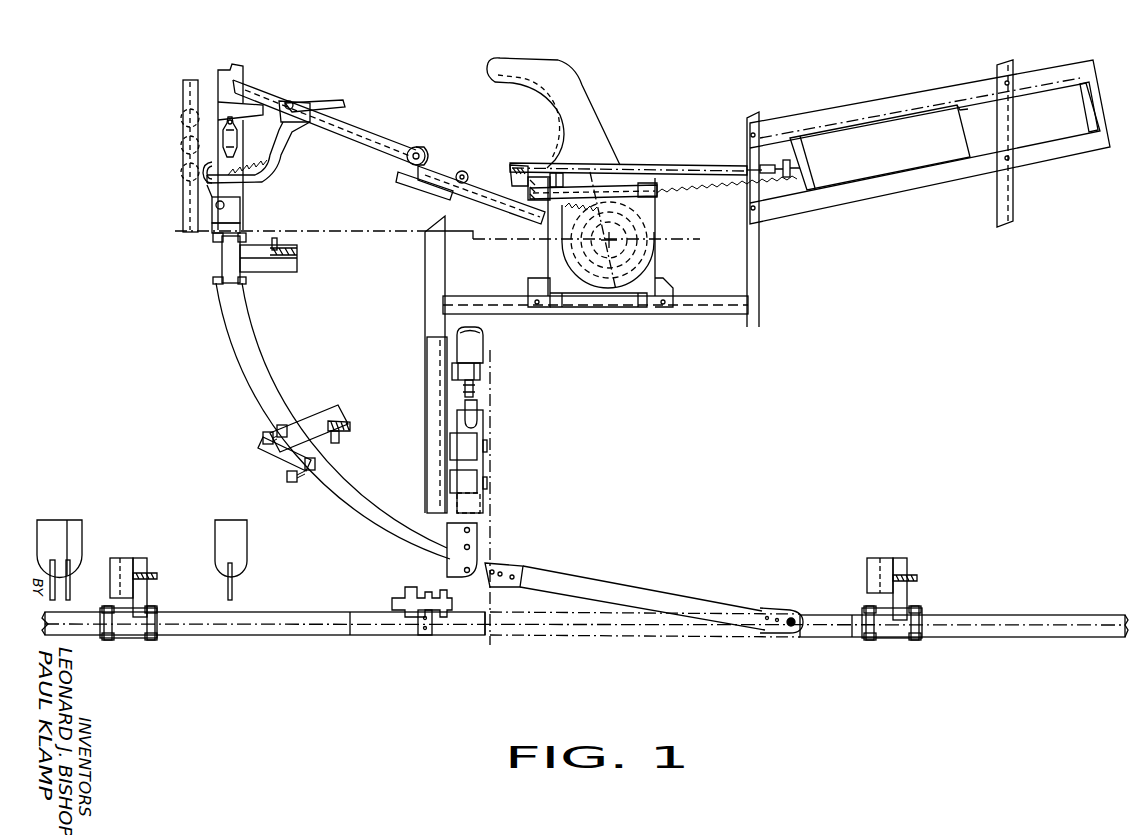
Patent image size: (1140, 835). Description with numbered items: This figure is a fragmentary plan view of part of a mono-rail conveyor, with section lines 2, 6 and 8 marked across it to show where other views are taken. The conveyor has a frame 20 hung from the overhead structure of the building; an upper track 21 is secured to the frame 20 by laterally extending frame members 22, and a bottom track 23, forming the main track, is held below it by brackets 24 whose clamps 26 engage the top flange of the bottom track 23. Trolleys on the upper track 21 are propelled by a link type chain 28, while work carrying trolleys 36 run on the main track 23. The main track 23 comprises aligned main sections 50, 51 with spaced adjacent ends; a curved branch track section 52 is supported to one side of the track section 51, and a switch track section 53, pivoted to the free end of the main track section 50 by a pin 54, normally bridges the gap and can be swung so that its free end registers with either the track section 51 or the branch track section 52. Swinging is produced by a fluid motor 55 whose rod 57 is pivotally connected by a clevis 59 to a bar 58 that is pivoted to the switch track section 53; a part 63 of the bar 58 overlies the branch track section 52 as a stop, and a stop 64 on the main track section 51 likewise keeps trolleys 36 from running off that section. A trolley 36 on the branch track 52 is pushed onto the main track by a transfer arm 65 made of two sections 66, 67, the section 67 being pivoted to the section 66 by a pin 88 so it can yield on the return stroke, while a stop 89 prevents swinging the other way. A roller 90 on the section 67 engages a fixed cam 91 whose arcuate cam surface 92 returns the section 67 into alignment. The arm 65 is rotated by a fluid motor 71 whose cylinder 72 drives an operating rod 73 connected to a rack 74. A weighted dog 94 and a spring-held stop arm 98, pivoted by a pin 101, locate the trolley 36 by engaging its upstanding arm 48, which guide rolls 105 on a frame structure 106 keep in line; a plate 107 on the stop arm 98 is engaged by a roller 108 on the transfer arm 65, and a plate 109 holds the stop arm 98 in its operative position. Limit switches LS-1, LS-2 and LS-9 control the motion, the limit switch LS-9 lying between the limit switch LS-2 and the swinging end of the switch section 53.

The section line 2- 2 is at (200, 242).
The section line 6- 6 is at (490, 327).
The drum 8 is at (608, 172).
The frame 20 is at (300, 265).
The upper track 21 is at (290, 636).
The laterally extending frame members 22 is at (125, 558).
The bottom track 23 is at (425, 636).
The brackets 24 is at (308, 420).
The clamps 26 is at (152, 641).
The link type chain 28 is at (1022, 623).
The work carrying trolleys 36 is at (212, 190).
The upstanding arm 48 is at (205, 173).
The main section 50 is at (825, 613).
The main section 51 is at (356, 611).
The curved branch track section 52 is at (377, 515).
The switch track section 53 is at (641, 588).
The pin 54 is at (793, 617).
The fluid motor 55 is at (488, 343).
The rod 57 is at (475, 389).
The bar 58 is at (485, 445).
The clevis 59 is at (478, 408).
The part 63 is at (480, 541).
The stop 64 is at (410, 587).
The transfer arm 65 is at (405, 140).
The section 66 is at (502, 208).
The section 67 is at (367, 133).
The fluid motor 71 is at (940, 150).
The cylinder 72 is at (866, 130).
The operating rod 73 is at (785, 177).
The rack 74 is at (719, 180).
The pin 88 is at (421, 154).
The stop 89 is at (415, 184).
The roller 90 is at (465, 172).
The fixed cam 91 is at (603, 138).
The arcuate cam surface 92 is at (542, 90).
The dog 94 is at (238, 136).
The stop 98 is at (283, 181).
The pin 101 is at (228, 205).
The guide rolls 105 is at (183, 133).
The frame structure 106 is at (185, 215).
The plate 107 is at (338, 97).
The roller 108 is at (292, 100).
The plate 109 is at (232, 100).
The limit switch LS-1 is at (52, 525).
The limit switch LS-2 is at (80, 528).
The limit switch LS-9 is at (248, 560).